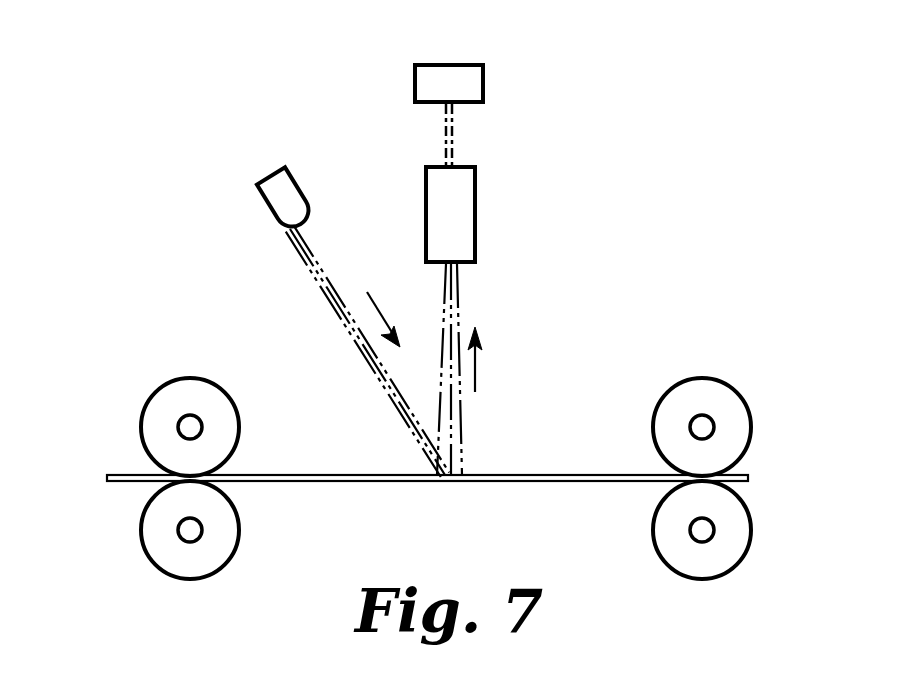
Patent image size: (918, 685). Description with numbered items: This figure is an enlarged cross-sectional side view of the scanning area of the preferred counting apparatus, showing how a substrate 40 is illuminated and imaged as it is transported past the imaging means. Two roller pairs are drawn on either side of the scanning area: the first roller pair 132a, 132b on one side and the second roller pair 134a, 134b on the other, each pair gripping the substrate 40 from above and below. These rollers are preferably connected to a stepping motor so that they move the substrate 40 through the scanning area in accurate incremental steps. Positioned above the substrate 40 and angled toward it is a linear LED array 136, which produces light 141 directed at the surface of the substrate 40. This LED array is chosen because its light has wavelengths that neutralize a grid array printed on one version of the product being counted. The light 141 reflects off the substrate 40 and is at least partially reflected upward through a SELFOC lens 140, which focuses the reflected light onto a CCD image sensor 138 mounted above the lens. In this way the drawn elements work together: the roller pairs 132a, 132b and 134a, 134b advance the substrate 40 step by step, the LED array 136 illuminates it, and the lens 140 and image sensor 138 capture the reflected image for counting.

The substrate 40 is at (553, 474).
The roller 132a is at (175, 378).
The roller 132b is at (150, 560).
The roller 134a is at (729, 383).
The roller 134b is at (751, 533).
The linear LED array 136 is at (268, 202).
The CCD image sensor 138 is at (446, 64).
The SELFOC lens 140 is at (477, 205).
The light 141 is at (341, 305).